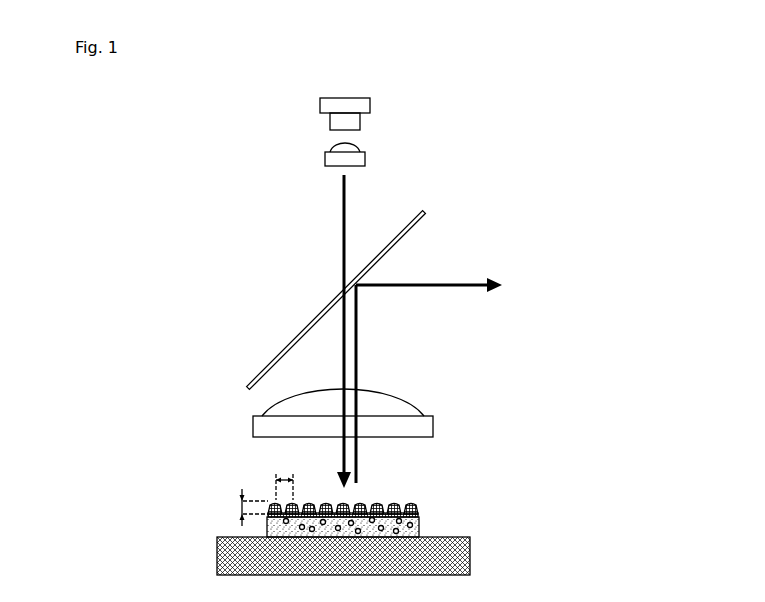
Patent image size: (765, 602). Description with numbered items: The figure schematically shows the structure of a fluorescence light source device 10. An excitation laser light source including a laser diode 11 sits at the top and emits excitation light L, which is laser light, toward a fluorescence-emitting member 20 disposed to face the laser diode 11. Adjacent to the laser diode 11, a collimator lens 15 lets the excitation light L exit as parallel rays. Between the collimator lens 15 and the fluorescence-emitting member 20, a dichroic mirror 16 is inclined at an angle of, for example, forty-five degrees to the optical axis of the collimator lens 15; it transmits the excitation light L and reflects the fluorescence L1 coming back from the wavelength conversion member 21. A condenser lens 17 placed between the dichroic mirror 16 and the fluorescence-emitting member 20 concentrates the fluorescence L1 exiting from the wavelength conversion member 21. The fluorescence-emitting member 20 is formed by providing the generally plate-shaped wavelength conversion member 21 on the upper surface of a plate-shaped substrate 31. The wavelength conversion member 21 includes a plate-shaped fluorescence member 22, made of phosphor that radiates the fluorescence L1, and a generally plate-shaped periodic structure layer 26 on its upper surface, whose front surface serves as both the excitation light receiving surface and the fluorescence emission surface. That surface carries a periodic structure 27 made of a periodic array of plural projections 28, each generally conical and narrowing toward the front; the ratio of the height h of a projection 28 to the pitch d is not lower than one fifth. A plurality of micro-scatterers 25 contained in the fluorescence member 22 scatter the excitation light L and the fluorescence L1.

The fluorescence light source device 10 is at (240, 142).
The laser diode 11 is at (371, 105).
The collimator lens 15 is at (366, 157).
The dichroic mirror 16 is at (427, 214).
The condenser lens 17 is at (434, 428).
The fluorescence-emitting member 20 is at (261, 493).
The wavelength conversion member 21 is at (259, 532).
The fluorescence member 22 is at (420, 521).
The micro-scatterers 25 is at (396, 531).
The periodic structure layer 26 is at (419, 513).
The periodic structure 27 is at (407, 498).
The projections 28 is at (371, 501).
The substrate 31 is at (471, 561).
The excitation light L is at (341, 226).
The fluorescence L1 is at (453, 287).
The height of the projection h is at (245, 507).
The pitch d is at (284, 479).